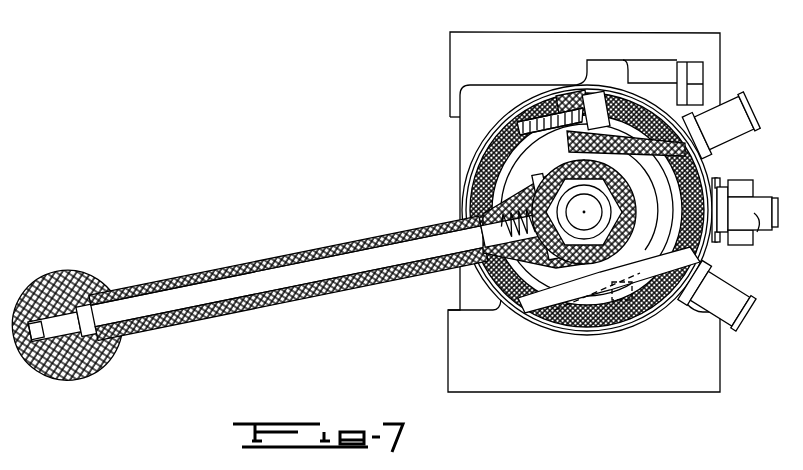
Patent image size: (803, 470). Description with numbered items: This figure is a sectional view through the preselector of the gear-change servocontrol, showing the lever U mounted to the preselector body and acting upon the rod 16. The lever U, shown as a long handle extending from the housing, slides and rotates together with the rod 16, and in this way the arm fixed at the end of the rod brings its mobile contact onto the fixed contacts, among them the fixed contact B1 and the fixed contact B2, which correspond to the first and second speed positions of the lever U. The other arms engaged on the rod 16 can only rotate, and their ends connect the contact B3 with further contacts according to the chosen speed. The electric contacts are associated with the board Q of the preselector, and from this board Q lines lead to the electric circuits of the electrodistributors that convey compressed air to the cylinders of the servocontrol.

The lever U is at (265, 303).
The rod 16 is at (622, 206).
The fixed contact B1 is at (725, 124).
The fixed contact B2 is at (738, 289).
The contact B3 is at (759, 230).
The board Q is at (717, 173).